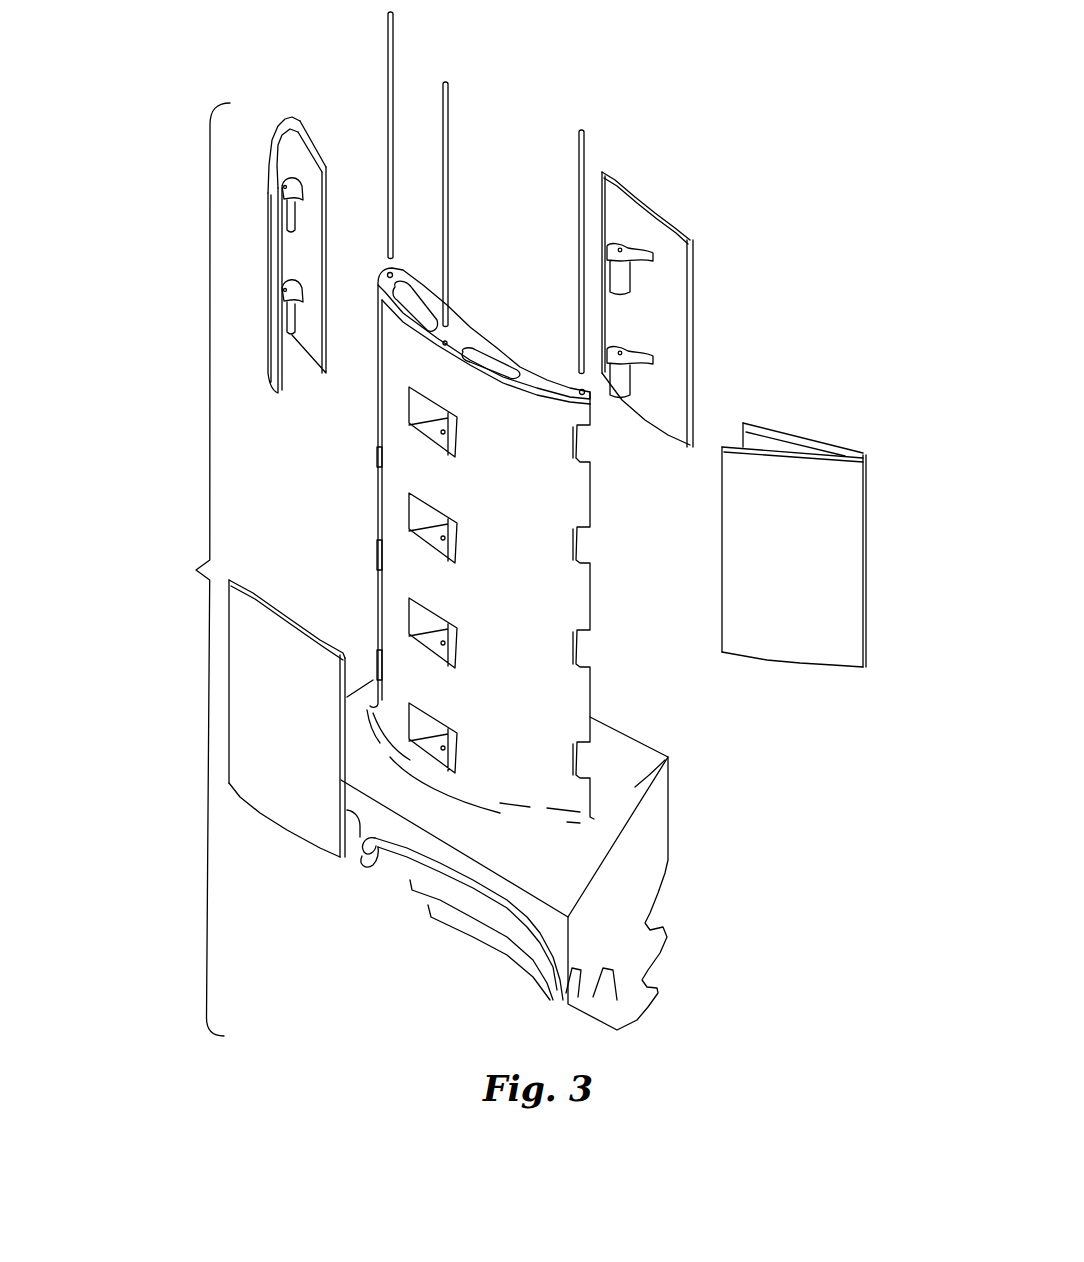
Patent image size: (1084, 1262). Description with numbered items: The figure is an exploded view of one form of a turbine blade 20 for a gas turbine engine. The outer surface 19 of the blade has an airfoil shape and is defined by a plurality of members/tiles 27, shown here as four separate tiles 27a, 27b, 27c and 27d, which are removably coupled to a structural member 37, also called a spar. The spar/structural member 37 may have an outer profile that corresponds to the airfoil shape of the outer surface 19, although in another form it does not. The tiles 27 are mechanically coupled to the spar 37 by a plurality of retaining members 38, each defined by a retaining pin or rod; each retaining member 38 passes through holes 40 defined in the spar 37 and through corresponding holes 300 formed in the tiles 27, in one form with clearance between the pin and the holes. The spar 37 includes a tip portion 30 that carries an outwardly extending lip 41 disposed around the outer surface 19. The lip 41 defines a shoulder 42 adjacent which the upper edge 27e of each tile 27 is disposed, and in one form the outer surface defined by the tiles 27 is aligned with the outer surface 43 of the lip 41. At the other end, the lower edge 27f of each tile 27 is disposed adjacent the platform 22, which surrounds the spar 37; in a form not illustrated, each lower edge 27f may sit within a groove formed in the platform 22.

The outer surface 19 is at (206, 731).
The turbine blade 20 is at (197, 569).
The platform 22 is at (667, 757).
The members/tiles 27 is at (276, 228).
The member/tile 27a is at (833, 567).
The member/tile 27b is at (640, 205).
The member/tile 27c is at (268, 163).
The member/tile 27d is at (290, 820).
The upper edge 27e is at (312, 142).
The lower edge 27f is at (272, 388).
The tip portion 30 is at (484, 314).
The structural member 37 is at (540, 703).
The retaining members 38 is at (388, 36).
The holes 40 is at (393, 271).
The lip 41 is at (417, 350).
The shoulder 42 is at (543, 400).
The outer surface of lip 43 is at (544, 398).
The holes 300 is at (283, 292).